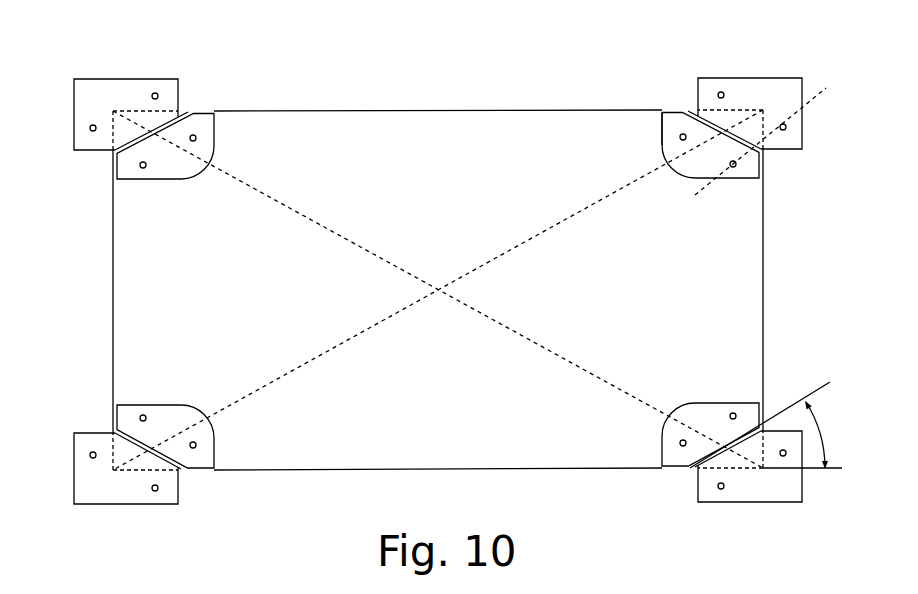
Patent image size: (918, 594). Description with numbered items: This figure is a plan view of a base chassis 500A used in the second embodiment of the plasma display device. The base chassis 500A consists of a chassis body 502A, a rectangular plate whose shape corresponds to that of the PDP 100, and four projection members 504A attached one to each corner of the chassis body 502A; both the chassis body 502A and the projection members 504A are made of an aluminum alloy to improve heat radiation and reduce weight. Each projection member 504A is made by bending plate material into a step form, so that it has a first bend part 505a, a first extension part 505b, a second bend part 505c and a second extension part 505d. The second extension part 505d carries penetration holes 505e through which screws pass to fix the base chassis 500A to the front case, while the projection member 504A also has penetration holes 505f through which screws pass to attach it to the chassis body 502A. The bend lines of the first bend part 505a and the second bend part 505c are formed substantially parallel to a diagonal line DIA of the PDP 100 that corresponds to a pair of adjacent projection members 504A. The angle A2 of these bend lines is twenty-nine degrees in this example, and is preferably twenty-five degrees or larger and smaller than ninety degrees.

The PDP 100 is at (135, 109).
The base chassis 500A is at (455, 76).
The chassis body 502A is at (395, 120).
The projection member 504A is at (62, 96).
The first bend part 505a is at (742, 152).
The first extension part 505b is at (686, 108).
The second bend part 505c is at (762, 174).
The second extension part 505d is at (89, 87).
The penetration hole 505e is at (719, 89).
The penetration hole 505f is at (192, 134).
The diagonal line DIA is at (237, 182).
The angle A2 is at (771, 425).